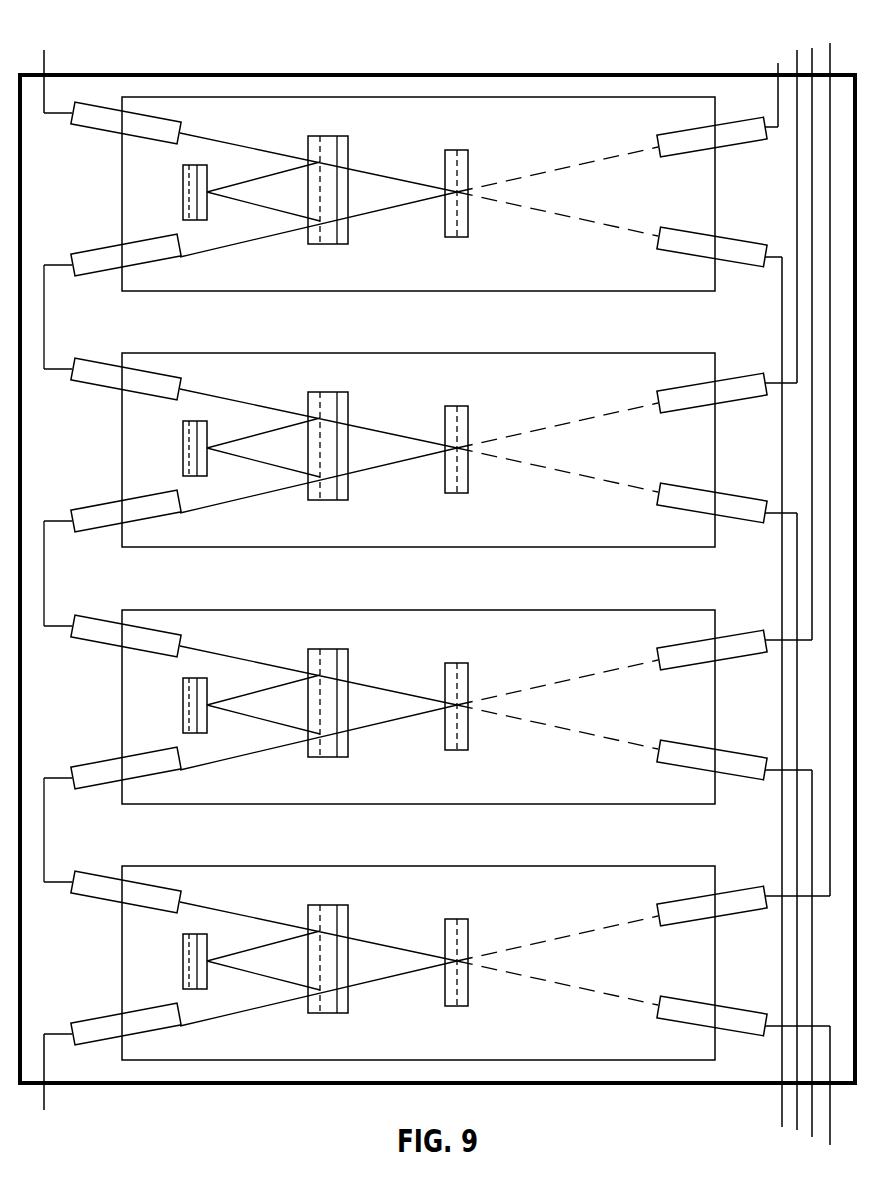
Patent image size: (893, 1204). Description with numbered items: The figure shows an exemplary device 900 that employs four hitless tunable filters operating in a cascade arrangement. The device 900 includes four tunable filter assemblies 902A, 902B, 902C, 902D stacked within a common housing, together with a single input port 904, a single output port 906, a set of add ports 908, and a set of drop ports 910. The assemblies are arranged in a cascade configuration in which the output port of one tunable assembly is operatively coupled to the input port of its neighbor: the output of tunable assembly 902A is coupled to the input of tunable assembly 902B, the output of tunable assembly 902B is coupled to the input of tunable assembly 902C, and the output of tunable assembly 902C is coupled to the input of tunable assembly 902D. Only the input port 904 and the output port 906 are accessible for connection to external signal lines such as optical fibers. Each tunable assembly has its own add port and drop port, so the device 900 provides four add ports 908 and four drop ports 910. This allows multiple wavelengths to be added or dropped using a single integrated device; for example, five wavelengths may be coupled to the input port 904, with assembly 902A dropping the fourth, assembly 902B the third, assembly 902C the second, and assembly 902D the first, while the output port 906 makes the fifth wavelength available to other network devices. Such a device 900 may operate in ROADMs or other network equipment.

The device 900 is at (317, 74).
The tunable filter assembly 902A is at (437, 963).
The tunable filter assembly 902B is at (428, 707).
The tunable filter assembly 902C is at (420, 450).
The tunable filter assembly 902D is at (413, 194).
The input port 904 is at (47, 1117).
The output port 906 is at (46, 47).
The add ports 908 is at (800, 1138).
The drop ports 910 is at (805, 42).